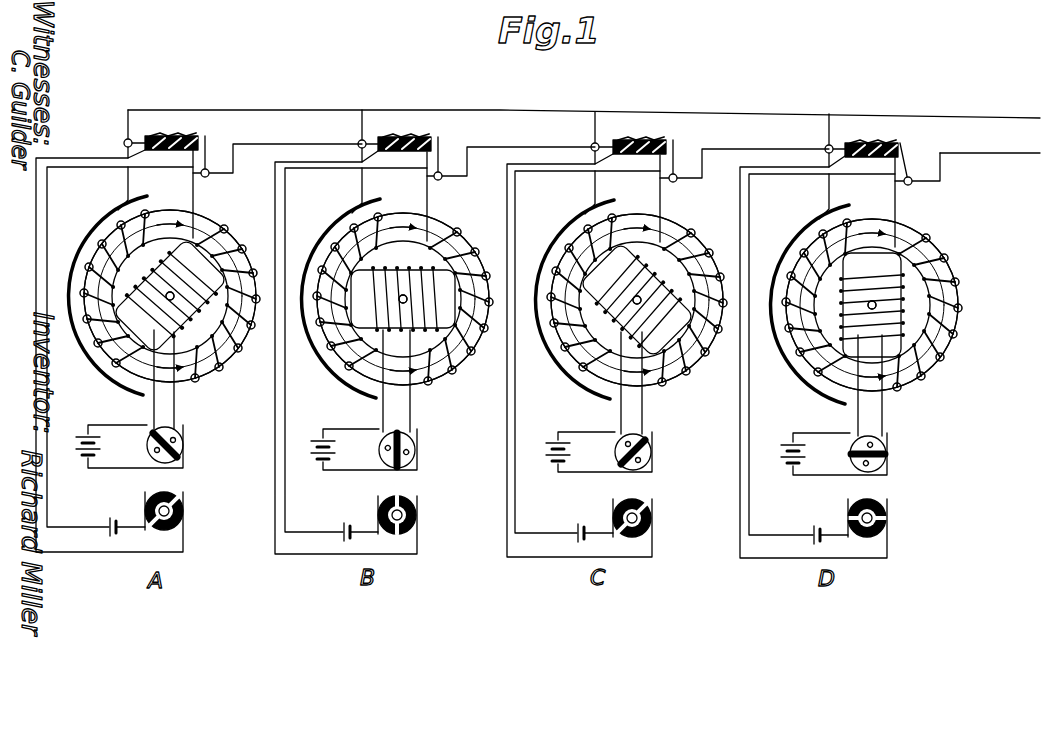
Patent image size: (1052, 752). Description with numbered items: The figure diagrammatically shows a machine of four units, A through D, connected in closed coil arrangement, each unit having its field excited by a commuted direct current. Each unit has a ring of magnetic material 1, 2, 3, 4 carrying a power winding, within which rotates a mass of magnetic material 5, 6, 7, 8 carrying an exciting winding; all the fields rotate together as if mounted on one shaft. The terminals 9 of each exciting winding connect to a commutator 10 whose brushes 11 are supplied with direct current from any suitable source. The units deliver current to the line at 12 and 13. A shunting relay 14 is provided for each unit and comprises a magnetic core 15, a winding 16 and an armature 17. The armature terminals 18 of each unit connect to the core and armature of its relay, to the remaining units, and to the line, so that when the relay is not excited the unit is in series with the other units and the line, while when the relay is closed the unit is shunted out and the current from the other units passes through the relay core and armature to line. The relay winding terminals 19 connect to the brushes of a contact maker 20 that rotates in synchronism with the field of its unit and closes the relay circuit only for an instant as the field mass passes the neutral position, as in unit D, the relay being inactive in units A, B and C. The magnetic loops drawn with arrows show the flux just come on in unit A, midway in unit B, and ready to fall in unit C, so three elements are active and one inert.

The ring of magnetic material 1 is at (207, 240).
The ring of magnetic material 2 is at (440, 247).
The ring of magnetic material 3 is at (680, 250).
The ring of magnetic material 4 is at (925, 240).
The mass of magnetic material 5 is at (240, 275).
The mass of magnetic material 6 is at (465, 262).
The mass of magnetic material 7 is at (700, 265).
The mass of magnetic material 8 is at (900, 310).
The terminals of exciting winding 9 is at (176, 412).
The commutator 10 is at (183, 432).
The brushes 11 is at (140, 440).
The line 12 is at (992, 113).
The line 13 is at (995, 154).
The shunting relay 14 is at (192, 130).
The magnetic core 15 is at (150, 136).
The winding 16 is at (173, 134).
The armature 17 is at (209, 146).
The armature terminals 18 is at (191, 194).
The relay winding terminals 19 is at (38, 420).
The contact maker 20 is at (182, 500).